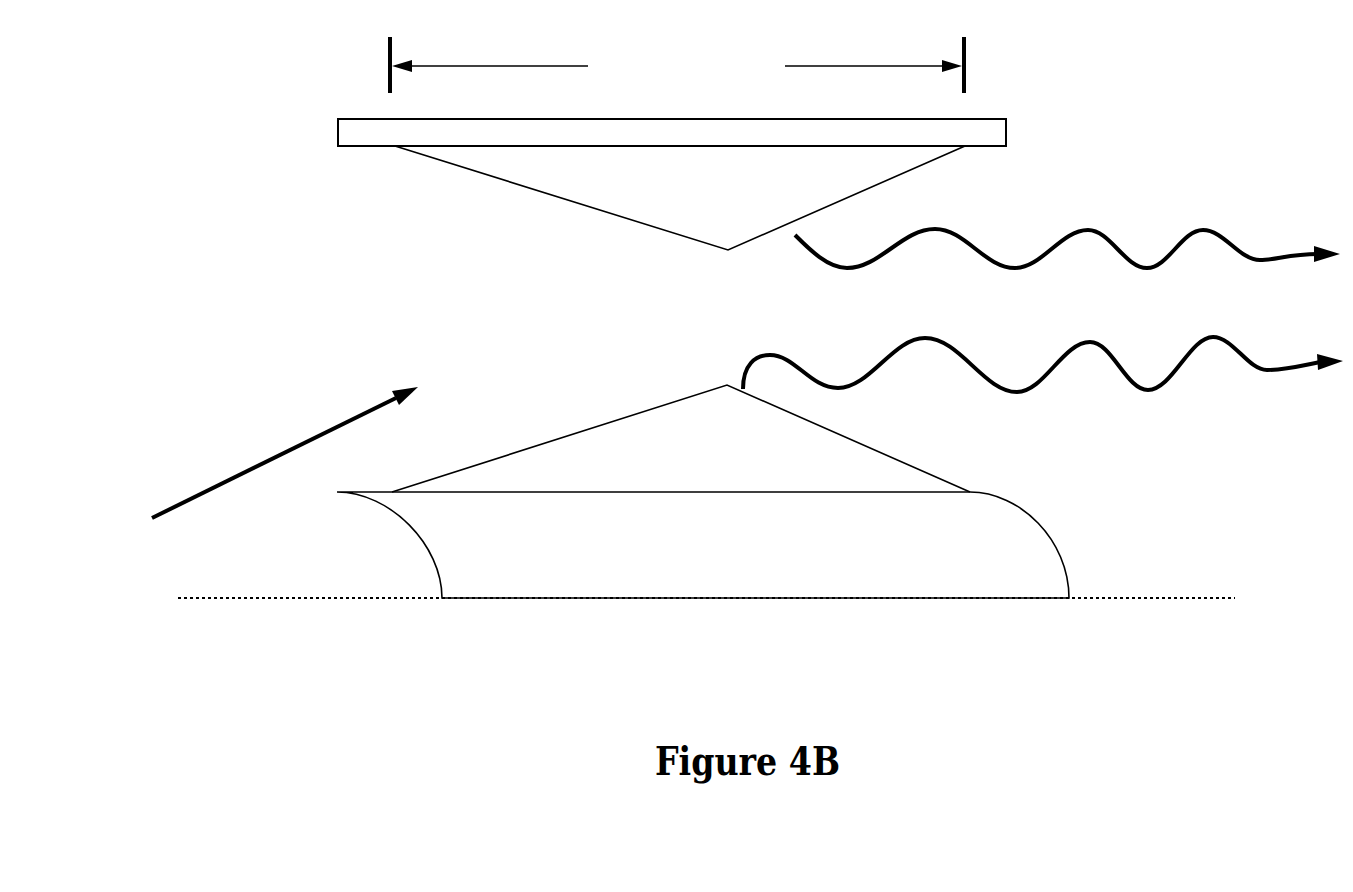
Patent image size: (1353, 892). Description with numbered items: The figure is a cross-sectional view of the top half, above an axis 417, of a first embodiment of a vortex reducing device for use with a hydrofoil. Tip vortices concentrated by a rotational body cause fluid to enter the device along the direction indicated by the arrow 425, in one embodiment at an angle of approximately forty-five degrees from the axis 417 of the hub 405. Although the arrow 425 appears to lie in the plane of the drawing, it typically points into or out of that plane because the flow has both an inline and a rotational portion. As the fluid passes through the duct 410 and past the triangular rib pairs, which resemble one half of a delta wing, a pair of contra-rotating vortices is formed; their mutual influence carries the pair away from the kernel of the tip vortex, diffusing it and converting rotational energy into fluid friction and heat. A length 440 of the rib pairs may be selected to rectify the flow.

The length of the rib pairs 440 is at (677, 65).
The duct 410 is at (1007, 138).
The arrow indicating fluid direction 425 is at (327, 427).
The hub 405 is at (1062, 555).
The axis 417 is at (1120, 599).